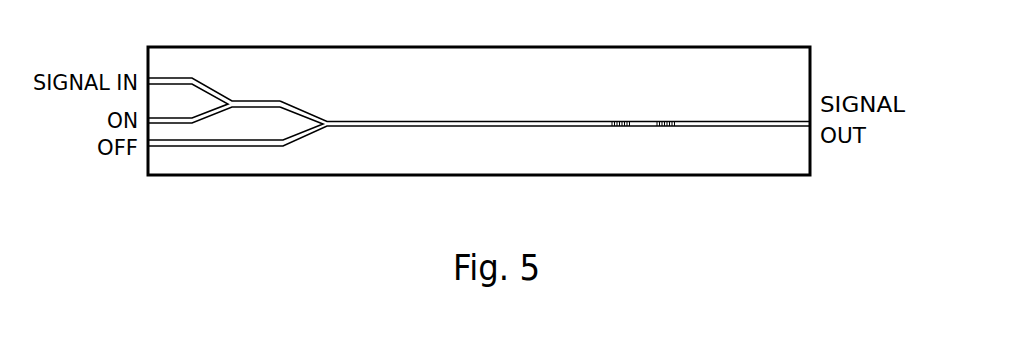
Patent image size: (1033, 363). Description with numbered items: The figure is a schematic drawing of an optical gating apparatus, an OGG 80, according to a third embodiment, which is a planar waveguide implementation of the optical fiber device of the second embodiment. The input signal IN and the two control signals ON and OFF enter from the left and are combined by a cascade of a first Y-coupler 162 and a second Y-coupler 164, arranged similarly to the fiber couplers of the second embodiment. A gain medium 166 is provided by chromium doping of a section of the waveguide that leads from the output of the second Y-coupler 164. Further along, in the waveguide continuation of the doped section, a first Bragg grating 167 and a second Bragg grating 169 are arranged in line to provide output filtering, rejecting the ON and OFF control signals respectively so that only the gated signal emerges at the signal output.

The OGG 80 is at (710, 195).
The first Y-coupler 162 is at (237, 102).
The second Y-coupler 164 is at (331, 130).
The gain medium 166 is at (477, 128).
The first Bragg grating 167 is at (620, 126).
The second Bragg grating 169 is at (665, 126).